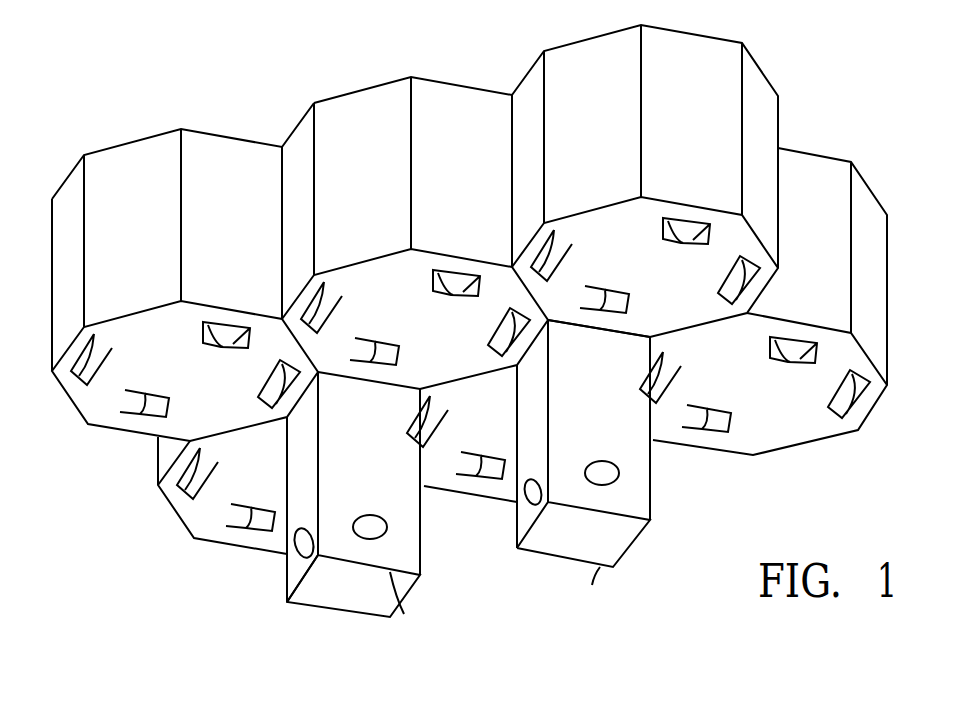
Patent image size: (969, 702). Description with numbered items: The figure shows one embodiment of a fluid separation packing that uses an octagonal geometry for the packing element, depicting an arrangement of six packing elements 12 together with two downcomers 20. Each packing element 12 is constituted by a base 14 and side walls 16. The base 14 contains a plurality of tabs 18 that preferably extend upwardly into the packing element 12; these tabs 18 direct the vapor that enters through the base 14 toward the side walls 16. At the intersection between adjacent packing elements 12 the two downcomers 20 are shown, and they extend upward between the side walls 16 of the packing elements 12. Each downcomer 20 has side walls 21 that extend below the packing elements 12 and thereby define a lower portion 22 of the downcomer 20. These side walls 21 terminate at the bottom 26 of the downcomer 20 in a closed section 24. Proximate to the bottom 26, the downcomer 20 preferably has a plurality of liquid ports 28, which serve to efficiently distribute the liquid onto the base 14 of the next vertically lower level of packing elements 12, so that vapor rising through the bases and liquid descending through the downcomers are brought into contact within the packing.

The packing element 12 is at (326, 76).
The base 14 is at (700, 297).
The side walls 16 is at (827, 278).
The tabs 18 is at (142, 403).
The downcomer 20 is at (441, 512).
The side walls 21 is at (286, 580).
The lower portion 22 is at (369, 473).
The closed section 24 is at (312, 594).
The bottom 26 is at (392, 590).
The liquid ports 28 is at (370, 535).